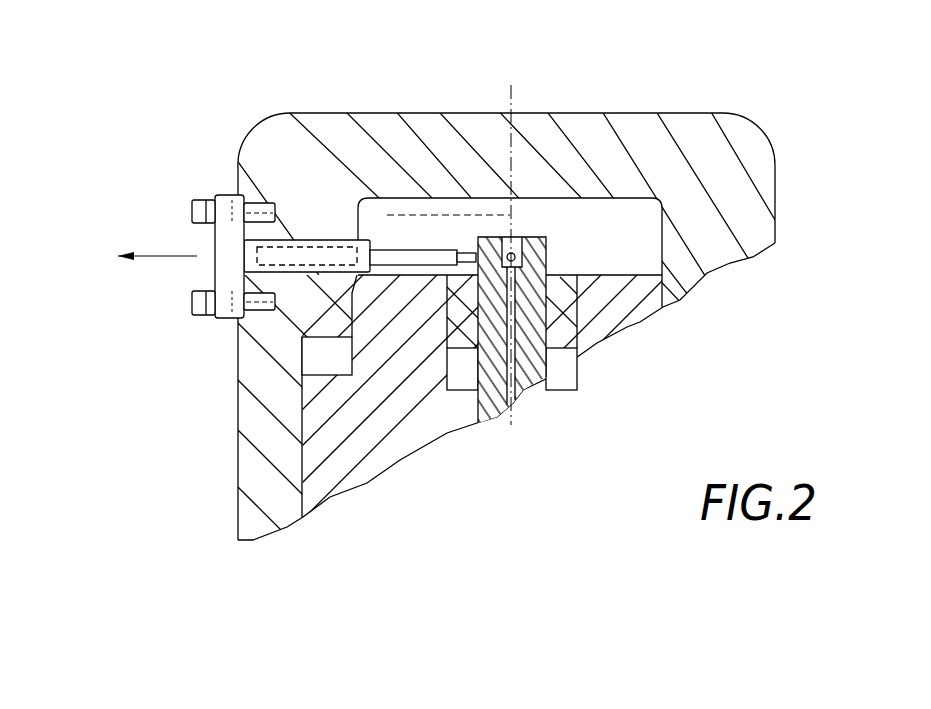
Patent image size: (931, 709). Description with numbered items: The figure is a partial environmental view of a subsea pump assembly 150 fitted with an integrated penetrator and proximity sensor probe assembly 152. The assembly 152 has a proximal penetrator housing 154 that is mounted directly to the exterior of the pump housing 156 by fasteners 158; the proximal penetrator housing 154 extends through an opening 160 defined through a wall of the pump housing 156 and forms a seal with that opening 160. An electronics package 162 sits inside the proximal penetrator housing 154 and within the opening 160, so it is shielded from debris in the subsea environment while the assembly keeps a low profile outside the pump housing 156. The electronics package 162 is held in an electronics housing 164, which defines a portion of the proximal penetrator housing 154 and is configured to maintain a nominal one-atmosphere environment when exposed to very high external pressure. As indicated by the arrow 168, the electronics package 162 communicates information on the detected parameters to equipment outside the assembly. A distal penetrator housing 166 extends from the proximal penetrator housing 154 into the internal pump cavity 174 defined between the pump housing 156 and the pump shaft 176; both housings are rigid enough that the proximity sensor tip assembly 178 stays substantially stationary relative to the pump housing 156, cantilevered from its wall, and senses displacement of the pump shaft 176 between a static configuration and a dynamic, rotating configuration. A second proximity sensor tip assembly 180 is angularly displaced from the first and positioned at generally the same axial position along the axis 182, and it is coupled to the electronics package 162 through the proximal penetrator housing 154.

The subsea pump assembly 150 is at (655, 90).
The integrated penetrator and proximity sensor probe assembly 152 is at (189, 203).
The proximal penetrator housing 154 is at (237, 222).
The pump housing 156 is at (726, 148).
The fasteners 158 is at (196, 307).
The opening 160 is at (290, 240).
The electronics package 162 is at (305, 297).
The electronics housing 164 is at (300, 348).
The distal penetrator housing 166 is at (365, 200).
The arrow 168 is at (152, 258).
The internal pump cavity 174 is at (440, 228).
The pump shaft 176 is at (548, 378).
The proximity sensor tip assembly 178 is at (464, 252).
The proximity sensor tip assembly 180 is at (517, 237).
The axis 182 is at (513, 100).